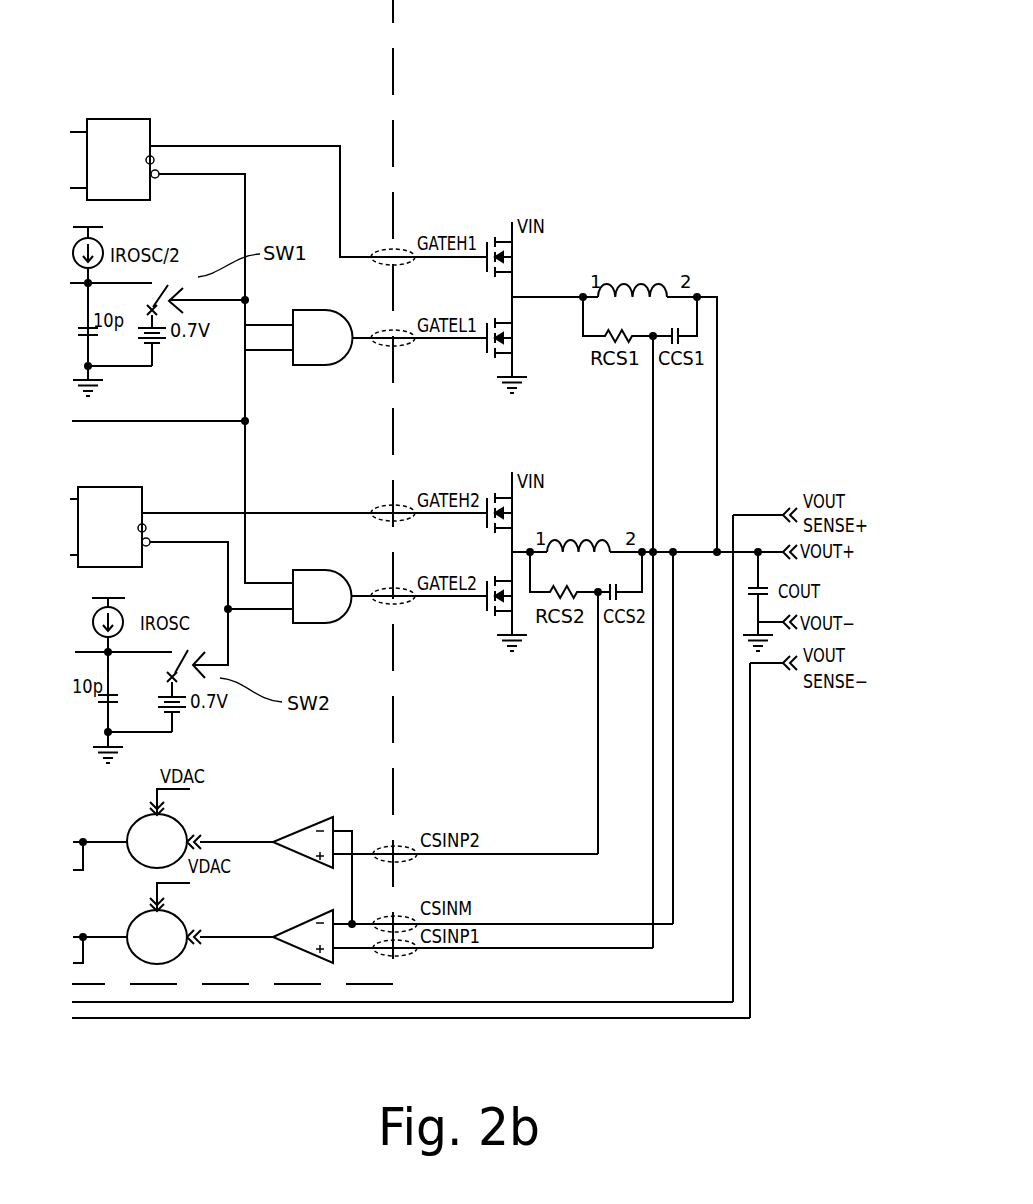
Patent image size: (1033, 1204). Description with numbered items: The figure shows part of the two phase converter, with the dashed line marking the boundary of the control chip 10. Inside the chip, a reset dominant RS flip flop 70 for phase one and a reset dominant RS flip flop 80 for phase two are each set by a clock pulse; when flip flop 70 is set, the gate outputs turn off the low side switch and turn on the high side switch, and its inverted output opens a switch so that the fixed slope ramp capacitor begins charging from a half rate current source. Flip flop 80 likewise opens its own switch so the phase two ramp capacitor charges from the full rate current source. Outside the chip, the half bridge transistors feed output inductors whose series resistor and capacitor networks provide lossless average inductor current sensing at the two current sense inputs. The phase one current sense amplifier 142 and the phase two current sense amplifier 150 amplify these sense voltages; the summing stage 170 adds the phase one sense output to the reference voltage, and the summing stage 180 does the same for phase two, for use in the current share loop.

The control chip 10 is at (393, 75).
The phase 1 RS flip flop 70 is at (138, 138).
The phase 2 RS flip flop 80 is at (127, 508).
The phase 2 current sense amplifier 150 is at (323, 817).
The current sense amplifier X24.5 (phase 1) 142 is at (307, 943).
The summing node (phase 2) 180 is at (183, 822).
The summing stage 170 is at (183, 920).